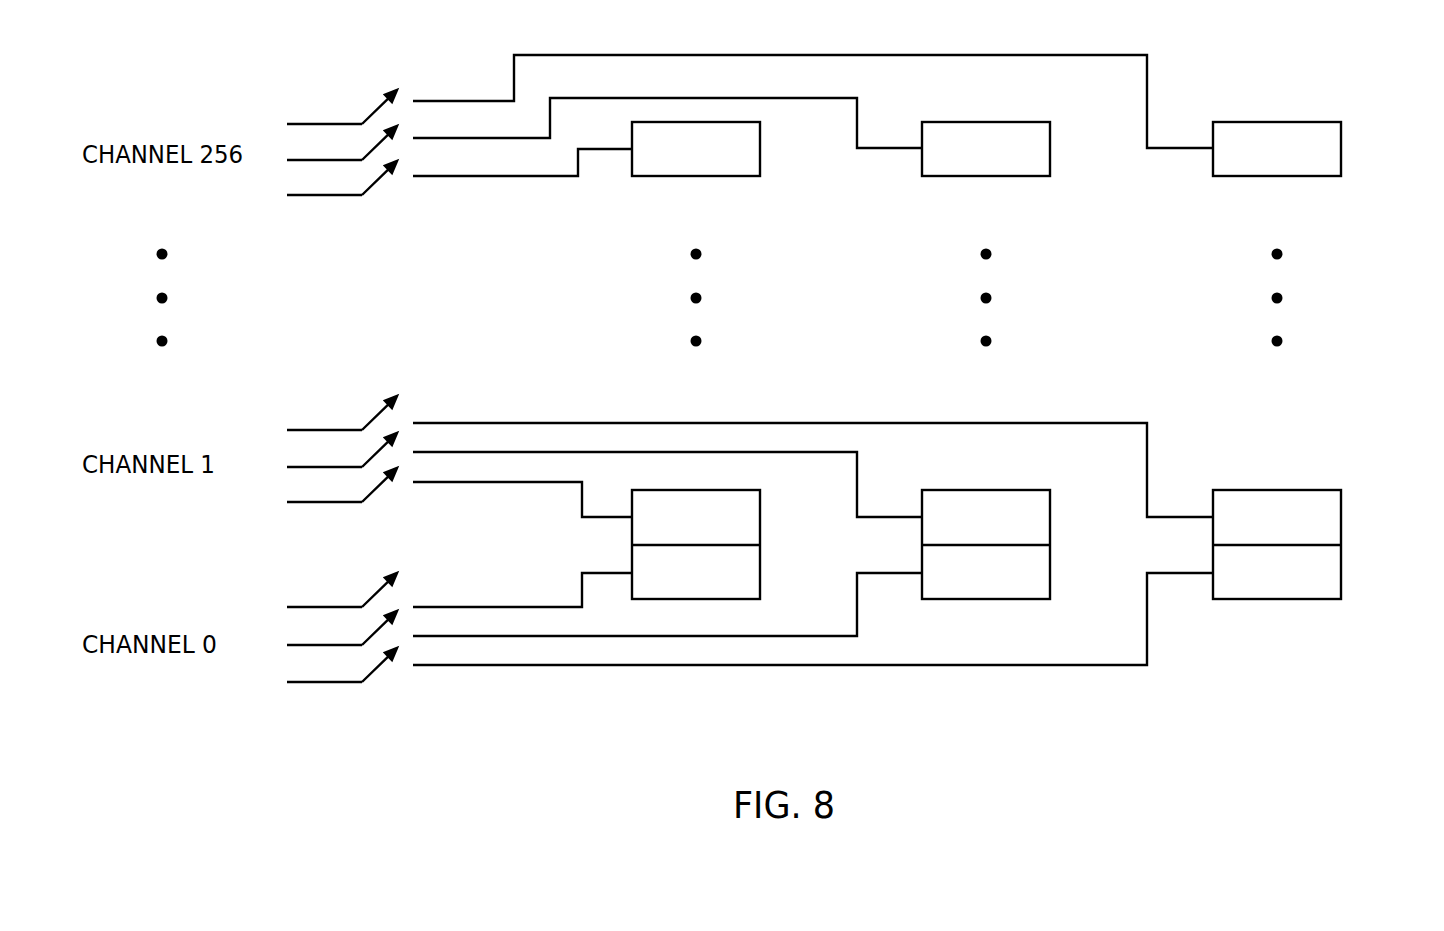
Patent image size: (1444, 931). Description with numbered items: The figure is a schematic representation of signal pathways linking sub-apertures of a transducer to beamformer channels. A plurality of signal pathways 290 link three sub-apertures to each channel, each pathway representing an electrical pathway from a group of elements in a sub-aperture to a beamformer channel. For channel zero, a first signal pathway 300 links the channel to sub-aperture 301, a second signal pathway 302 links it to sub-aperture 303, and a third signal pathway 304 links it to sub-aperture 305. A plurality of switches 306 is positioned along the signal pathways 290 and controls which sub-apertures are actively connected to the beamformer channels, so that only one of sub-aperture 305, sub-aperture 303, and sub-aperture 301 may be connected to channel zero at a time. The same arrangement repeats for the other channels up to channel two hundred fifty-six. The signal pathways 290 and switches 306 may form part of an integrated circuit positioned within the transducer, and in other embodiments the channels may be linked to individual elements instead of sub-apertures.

The signal pathways 290 is at (455, 176).
The first signal pathway 300 is at (465, 667).
The sub-aperture 301 is at (1341, 575).
The second signal pathway 302 is at (510, 635).
The sub-aperture 303 is at (1050, 575).
The third signal pathway 304 is at (465, 606).
The sub-aperture 305 is at (760, 575).
The switches 306 is at (368, 185).